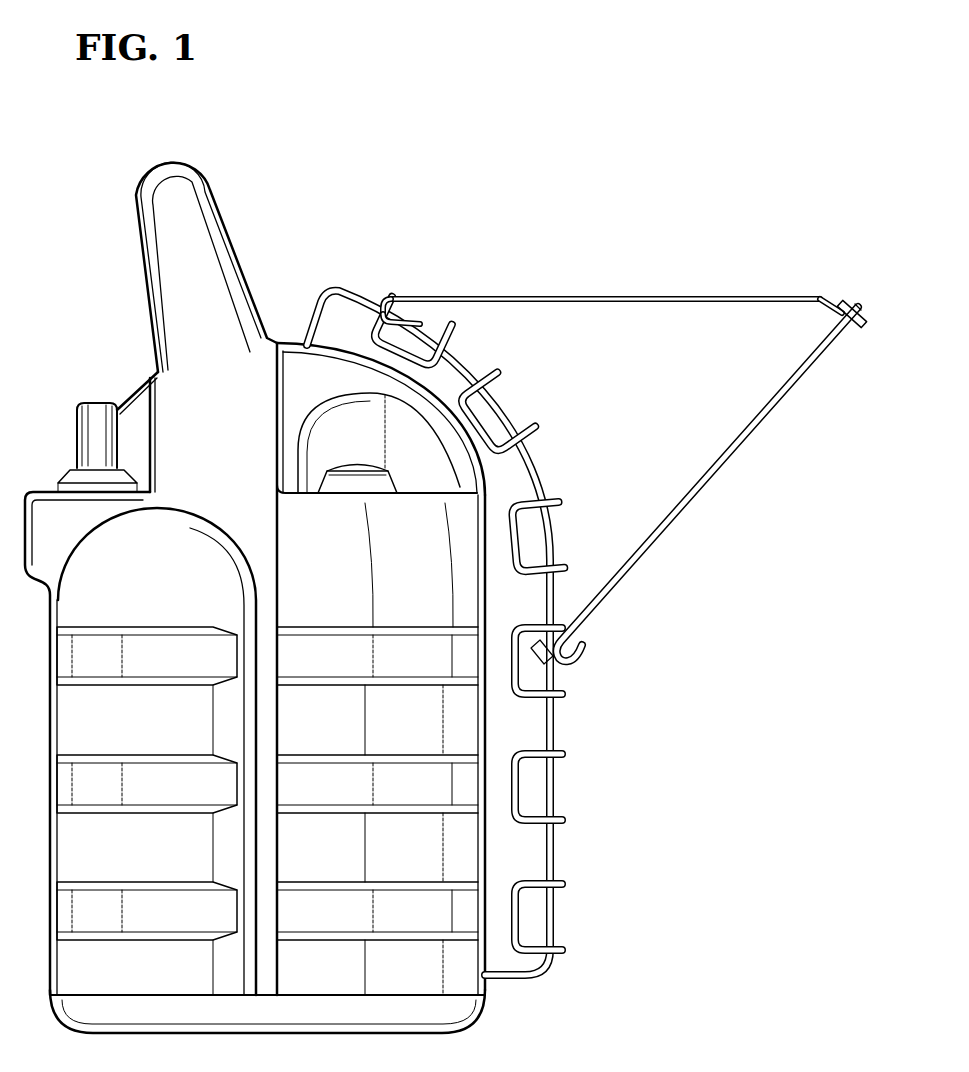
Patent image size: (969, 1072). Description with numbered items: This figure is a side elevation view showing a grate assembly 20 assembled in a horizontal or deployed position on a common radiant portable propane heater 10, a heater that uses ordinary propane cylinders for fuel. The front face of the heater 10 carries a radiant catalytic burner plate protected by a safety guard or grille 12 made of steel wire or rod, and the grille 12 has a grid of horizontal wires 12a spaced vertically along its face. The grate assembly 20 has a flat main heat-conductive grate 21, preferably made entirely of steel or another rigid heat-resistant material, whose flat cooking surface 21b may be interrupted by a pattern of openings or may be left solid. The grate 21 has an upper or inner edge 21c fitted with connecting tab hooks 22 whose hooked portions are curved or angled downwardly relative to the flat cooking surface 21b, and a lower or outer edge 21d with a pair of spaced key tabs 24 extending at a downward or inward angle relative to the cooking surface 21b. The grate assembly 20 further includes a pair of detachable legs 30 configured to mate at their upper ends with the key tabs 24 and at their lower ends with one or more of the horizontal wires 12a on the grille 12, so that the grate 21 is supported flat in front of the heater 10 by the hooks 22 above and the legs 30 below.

The radiant portable propane heater 10 is at (118, 354).
The safety guard or grille 12 is at (340, 290).
The horizontal wires 12a is at (426, 374).
The grate assembly 20 is at (635, 427).
The main heat-conductive grate 21 is at (612, 300).
The flat cooking surface 21b is at (632, 292).
The upper or inner edge 21c is at (386, 298).
The lower or outer edge 21d is at (818, 292).
The connecting tab hooks 22 is at (392, 322).
The key tabs 24 is at (844, 308).
The detachable legs 30 is at (744, 443).